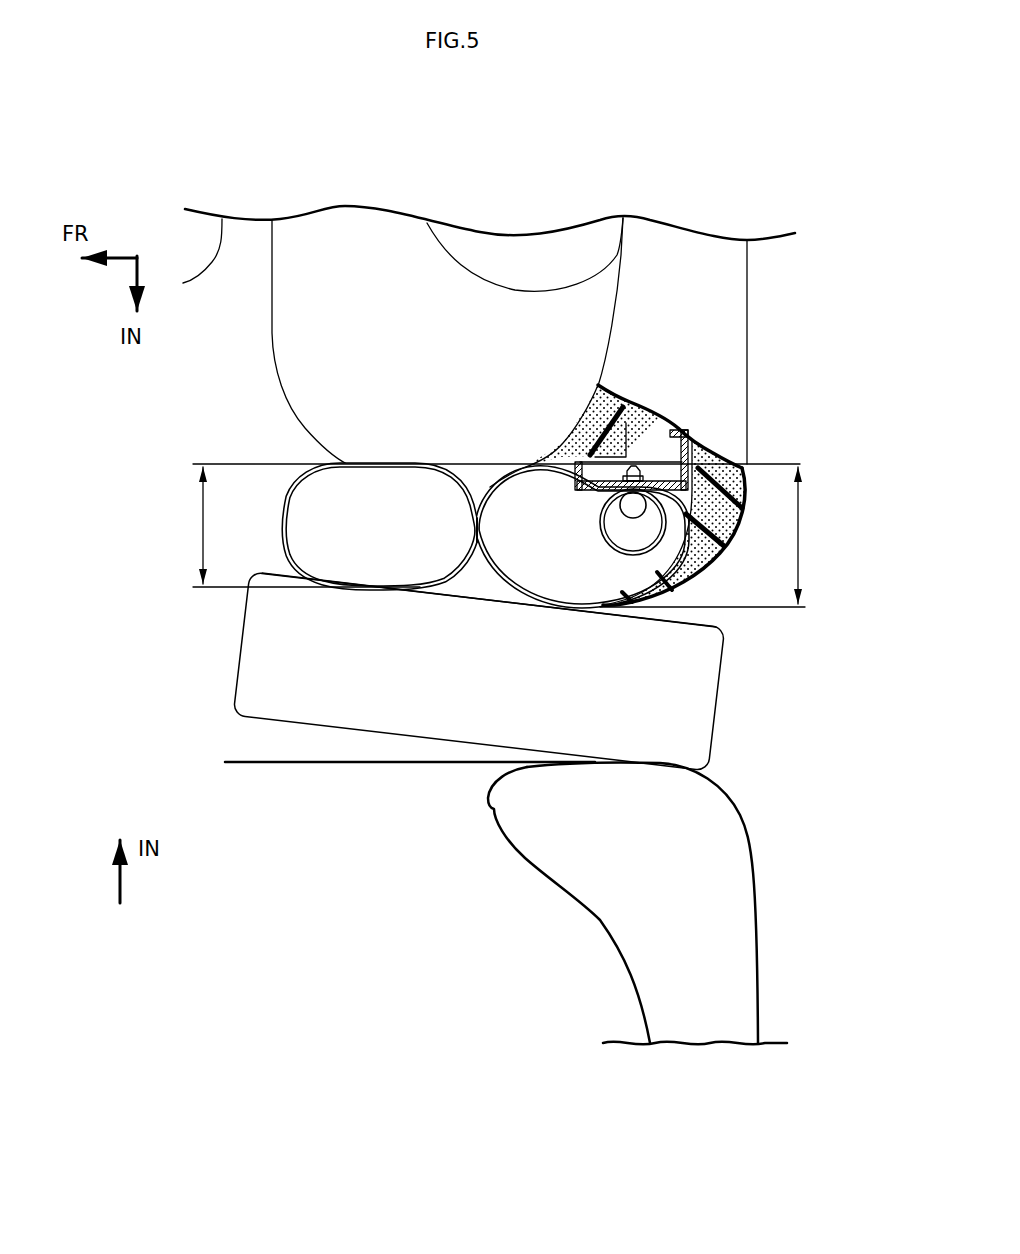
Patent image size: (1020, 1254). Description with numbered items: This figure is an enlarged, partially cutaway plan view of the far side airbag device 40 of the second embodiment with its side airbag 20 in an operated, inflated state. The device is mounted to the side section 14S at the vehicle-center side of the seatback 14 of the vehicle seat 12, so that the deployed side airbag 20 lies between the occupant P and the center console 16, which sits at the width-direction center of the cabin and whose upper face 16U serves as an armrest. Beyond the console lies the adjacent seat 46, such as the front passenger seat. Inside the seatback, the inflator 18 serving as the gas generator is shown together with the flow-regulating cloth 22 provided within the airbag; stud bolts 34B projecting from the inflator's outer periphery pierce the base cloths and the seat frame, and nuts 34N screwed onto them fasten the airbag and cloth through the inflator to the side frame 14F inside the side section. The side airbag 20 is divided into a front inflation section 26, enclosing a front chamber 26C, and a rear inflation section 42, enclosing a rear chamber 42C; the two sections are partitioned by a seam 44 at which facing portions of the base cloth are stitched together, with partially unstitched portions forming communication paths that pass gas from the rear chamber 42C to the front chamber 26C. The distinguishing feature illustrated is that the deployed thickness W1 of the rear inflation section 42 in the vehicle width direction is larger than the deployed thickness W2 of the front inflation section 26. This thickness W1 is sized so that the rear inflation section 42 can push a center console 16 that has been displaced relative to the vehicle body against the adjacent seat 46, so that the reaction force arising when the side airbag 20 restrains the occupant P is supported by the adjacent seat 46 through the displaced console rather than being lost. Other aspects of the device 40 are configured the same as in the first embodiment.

The vehicle seat 12 is at (780, 302).
The seatback 14 is at (728, 415).
The side frame 14F is at (675, 422).
The side section 14S is at (710, 543).
The center console 16 is at (545, 671).
The upper face 16U is at (718, 678).
The inflator 18 is at (634, 512).
The side airbag 20 is at (542, 668).
The flow-regulating cloth 22 is at (614, 513).
The front inflation section 26 is at (440, 585).
The front chamber 26C is at (392, 534).
The stud bolt 34B is at (633, 466).
The nut 34N is at (645, 475).
The far side airbag device 40 is at (205, 457).
The rear inflation section 42 is at (505, 585).
The rear chamber 42C is at (592, 569).
The seam 44 is at (476, 540).
The adjacent seat 46 is at (780, 880).
The occupant P is at (298, 322).
The deployed thickness of the rear inflation section W1 is at (722, 537).
The deployed thickness of the front inflation section W2 is at (476, 525).